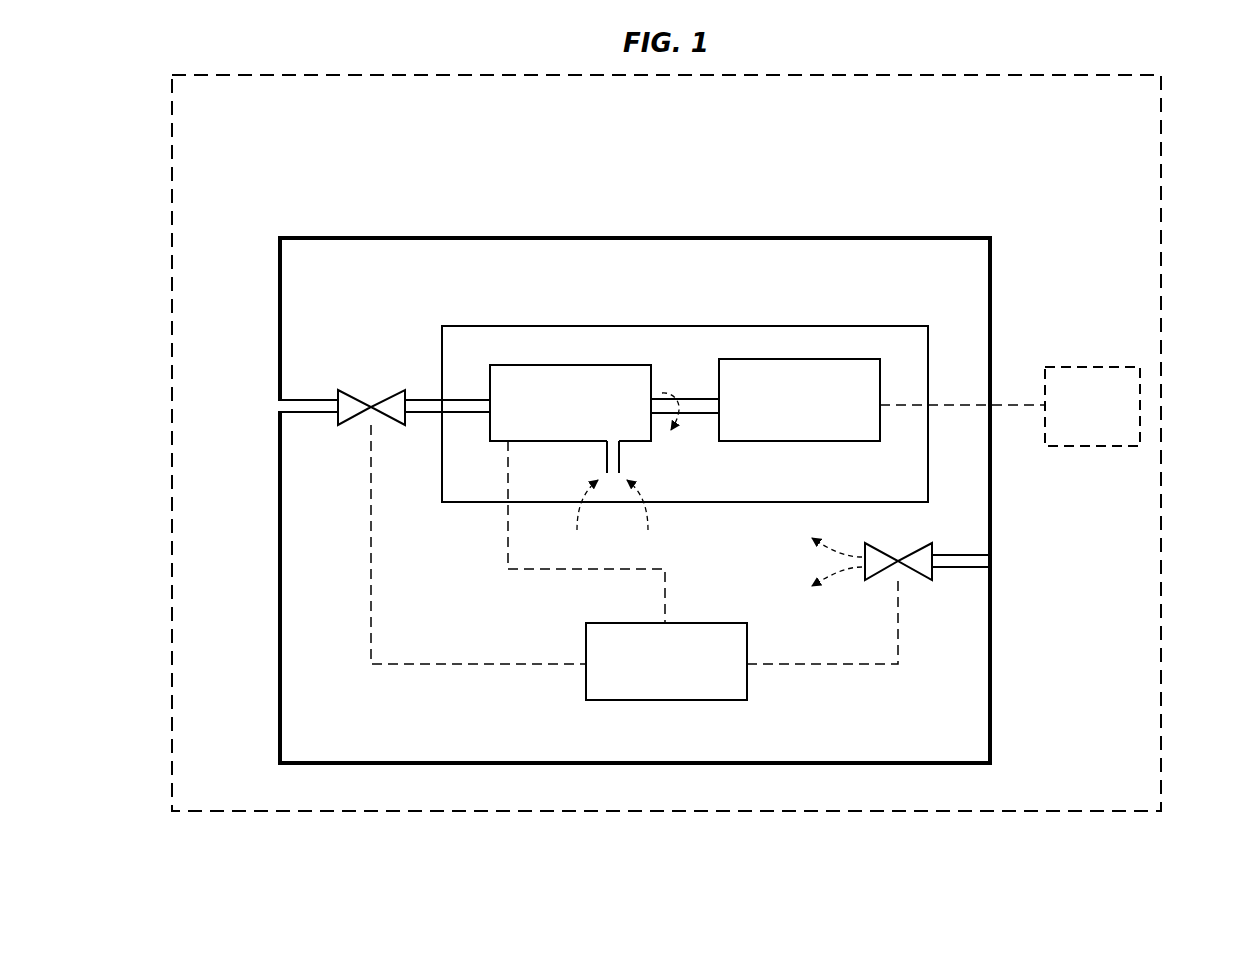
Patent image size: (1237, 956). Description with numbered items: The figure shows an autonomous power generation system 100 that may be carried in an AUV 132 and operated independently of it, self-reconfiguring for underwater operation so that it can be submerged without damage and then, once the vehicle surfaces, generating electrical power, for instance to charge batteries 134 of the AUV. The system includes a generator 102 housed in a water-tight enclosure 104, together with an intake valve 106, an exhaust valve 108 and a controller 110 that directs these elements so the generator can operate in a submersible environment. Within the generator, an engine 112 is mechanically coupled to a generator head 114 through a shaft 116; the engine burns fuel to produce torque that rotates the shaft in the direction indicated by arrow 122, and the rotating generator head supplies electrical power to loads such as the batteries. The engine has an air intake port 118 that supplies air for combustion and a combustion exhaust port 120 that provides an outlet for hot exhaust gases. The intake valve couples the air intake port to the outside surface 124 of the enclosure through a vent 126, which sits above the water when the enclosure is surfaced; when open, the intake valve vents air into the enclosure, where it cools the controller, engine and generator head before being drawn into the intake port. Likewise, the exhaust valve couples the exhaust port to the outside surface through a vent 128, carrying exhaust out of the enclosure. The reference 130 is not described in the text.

The autonomous power generation system 100 is at (760, 130).
The generator 102 is at (862, 325).
The water-tight enclosure 104 is at (635, 500).
The intake valve 106 is at (888, 545).
The exhaust valve 108 is at (352, 425).
The controller 110 is at (634, 562).
The engine 112 is at (570, 403).
The generator head 114 is at (799, 400).
The shaft 116 is at (697, 415).
The air intake port 118 is at (607, 455).
The combustion exhaust port 120 is at (475, 400).
The arrow 122 is at (680, 388).
The outside surface 124 is at (912, 236).
The vent 126 is at (996, 561).
The vent 128 is at (276, 406).
The enclosure side wall 130 is at (986, 618).
The AUV 132 is at (1166, 320).
The batteries 134 is at (1010, 406).